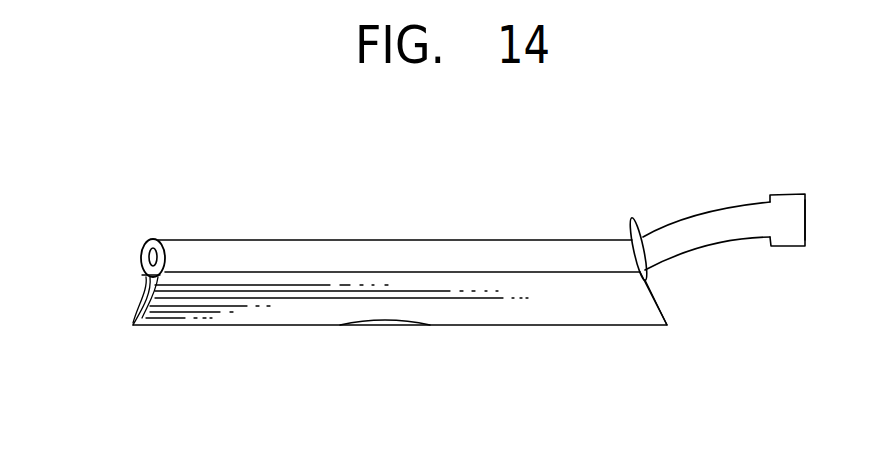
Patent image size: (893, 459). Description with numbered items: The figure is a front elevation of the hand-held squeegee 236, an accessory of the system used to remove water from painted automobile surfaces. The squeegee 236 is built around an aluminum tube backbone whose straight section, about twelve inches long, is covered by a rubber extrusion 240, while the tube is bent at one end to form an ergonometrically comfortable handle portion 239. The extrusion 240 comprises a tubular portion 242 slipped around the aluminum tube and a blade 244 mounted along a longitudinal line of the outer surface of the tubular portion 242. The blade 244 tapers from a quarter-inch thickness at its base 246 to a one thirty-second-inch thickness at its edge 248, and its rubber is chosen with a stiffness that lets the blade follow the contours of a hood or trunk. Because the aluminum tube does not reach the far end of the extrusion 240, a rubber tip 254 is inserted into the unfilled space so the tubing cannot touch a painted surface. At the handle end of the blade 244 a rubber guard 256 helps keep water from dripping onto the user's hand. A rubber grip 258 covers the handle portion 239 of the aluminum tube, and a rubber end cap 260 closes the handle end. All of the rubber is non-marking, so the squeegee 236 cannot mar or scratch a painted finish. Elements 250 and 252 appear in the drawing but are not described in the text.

The hand-held squeegee 236 is at (359, 275).
The handle portion 239 is at (697, 213).
The rubber extrusion 240 is at (150, 292).
The tubular portion 242 is at (513, 252).
The blade 244 is at (480, 298).
The base 246 is at (596, 314).
The edge 248 is at (380, 327).
The neck 250 is at (138, 307).
The right edge of panel 252 is at (662, 297).
The rubber tip 254 is at (124, 257).
The rubber guard 256 is at (643, 236).
The rubber grip 258 is at (737, 213).
The rubber end cap 260 is at (807, 222).